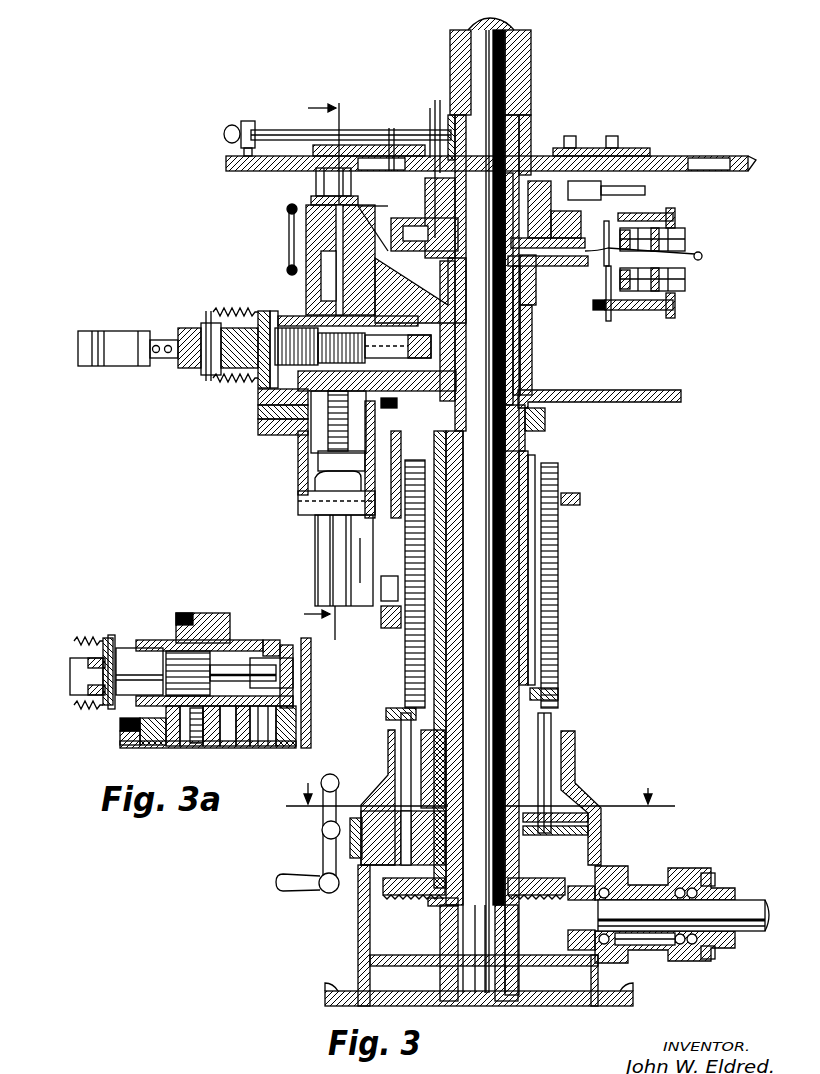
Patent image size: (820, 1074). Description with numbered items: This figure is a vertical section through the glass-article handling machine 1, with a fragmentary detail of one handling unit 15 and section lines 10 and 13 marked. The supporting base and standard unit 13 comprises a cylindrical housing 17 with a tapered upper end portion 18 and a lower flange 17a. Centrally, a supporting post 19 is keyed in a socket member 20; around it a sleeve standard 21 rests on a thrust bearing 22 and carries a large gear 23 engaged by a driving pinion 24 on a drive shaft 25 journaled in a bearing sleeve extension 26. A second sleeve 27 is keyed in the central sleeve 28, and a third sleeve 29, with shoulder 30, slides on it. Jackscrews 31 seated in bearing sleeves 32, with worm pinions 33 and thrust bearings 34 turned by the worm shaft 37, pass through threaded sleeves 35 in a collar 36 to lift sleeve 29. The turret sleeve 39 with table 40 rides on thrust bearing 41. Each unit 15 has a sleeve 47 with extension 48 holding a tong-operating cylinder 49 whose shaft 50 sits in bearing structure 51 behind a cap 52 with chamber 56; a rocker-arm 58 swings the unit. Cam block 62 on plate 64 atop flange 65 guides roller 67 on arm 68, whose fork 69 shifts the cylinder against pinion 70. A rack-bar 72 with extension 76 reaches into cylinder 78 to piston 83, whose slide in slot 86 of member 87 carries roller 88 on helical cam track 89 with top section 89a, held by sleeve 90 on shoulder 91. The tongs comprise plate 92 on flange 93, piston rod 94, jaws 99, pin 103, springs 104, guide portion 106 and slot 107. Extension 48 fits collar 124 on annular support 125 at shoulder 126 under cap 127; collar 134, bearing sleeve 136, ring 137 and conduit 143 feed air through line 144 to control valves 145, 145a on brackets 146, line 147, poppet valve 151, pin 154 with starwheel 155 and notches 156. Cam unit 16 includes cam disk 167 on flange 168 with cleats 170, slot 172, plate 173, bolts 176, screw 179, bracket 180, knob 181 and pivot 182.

In FIG. 3, the machine 1 is at (668, 148).
In FIG. 3, the section line 10 is at (306, 364).
In FIG. 3, the supporting base and standard unit 13 is at (570, 735).
In FIG. 3, the article handling unit 15 is at (157, 352).
In FIG. 3, the cam unit 16 is at (763, 152).
In FIG. 3, the housing 17 is at (350, 908).
In FIG. 3, the flange 17a is at (327, 983).
In FIG. 3, the inwardly tapered upper end portion 18 is at (567, 775).
In FIG. 3, the supporting post 19 is at (470, 48).
In FIG. 3, the socket member 20 is at (432, 929).
In FIG. 3, the sleeve standard 21 is at (427, 92).
In FIG. 3, the thrust bearing 22 is at (440, 896).
In FIG. 3, the large gear 23 is at (392, 887).
In FIG. 3, the driving pinion 24 is at (575, 925).
In FIG. 3, the drive shaft 25 is at (746, 892).
In FIG. 3, the bearing sleeve extension 26 is at (640, 877).
In FIG. 3, the second sleeve 27 is at (428, 448).
In FIG. 3, the central sleeve 28 is at (380, 722).
In FIG. 3, the third sleeve 29 is at (527, 443).
In FIG. 3, the shoulder 30 is at (522, 425).
In FIG. 3, the jackscrews 31 is at (397, 510).
In FIG. 3, the bearing sleeve 32 is at (350, 830).
In FIG. 3, the worm pinion 33 is at (580, 809).
In FIG. 3, the thrust bearing 34 is at (580, 823).
In FIG. 3, the threaded sleeve 35 is at (545, 697).
In FIG. 3, the large collar 36 is at (552, 683).
In FIG. 3, the worm shaft 37 is at (315, 816).
In FIG. 3, the sleeve 39 is at (524, 350).
In FIG. 3, the annular supporting shelf or table 40 is at (640, 382).
In FIG. 3, the thrust bearing 41 is at (537, 403).
In FIG. 3, the sleeve 47 is at (258, 310).
In FIG. 3A, the sleeve 47 is at (140, 632).
In FIG. 3, the cylindrical extension 48 is at (417, 329).
In FIG. 3A, the cylindrical extension 48 is at (210, 605).
In FIG. 3, the tong-operating cylinder 49 is at (320, 346).
In FIG. 3A, the tong-operating cylinder 49 is at (125, 640).
In FIG. 3, the shaft portion 50 is at (405, 327).
In FIG. 3A, the shaft portion 50 is at (268, 665).
In FIG. 3A, the bearing structure 51 is at (235, 738).
In FIG. 3, the cap 52 is at (375, 305).
In FIG. 3A, the cap 52 is at (243, 632).
In FIG. 3A, the chamber 56 is at (285, 672).
In FIG. 3, the rocker-arm 58 is at (290, 266).
In FIG. 3, the cam block 62 is at (250, 388).
In FIG. 3A, the cam block 62 is at (118, 723).
In FIG. 3, the plate 64 is at (250, 403).
In FIG. 3A, the plate 64 is at (125, 737).
In FIG. 3, the flange 65 is at (250, 418).
In FIG. 3, the roller 67 is at (262, 427).
In FIG. 3A, the roller 67 is at (112, 714).
In FIG. 3A, the radially extending arm 68 is at (257, 742).
In FIG. 3A, the fork 69 is at (165, 738).
In FIG. 3A, the pinion 70 is at (160, 643).
In FIG. 3, the rack-bar 72 is at (356, 454).
In FIG. 3A, the rack-bar 72 is at (200, 738).
In FIG. 3, the horizontal extension 76 is at (341, 441).
In FIG. 3, the cylinder 78 is at (290, 459).
In FIG. 3, the piston 83 is at (290, 484).
In FIG. 3, the cross-shaped guide slot 86 is at (330, 525).
In FIG. 3, the member 87 is at (290, 505).
In FIG. 3, the roller 88 is at (380, 568).
In FIG. 3, the cam track 89 is at (560, 540).
In FIG. 3, the top section 89a is at (373, 615).
In FIG. 3, the sleeve 90 is at (551, 592).
In FIG. 3, the shoulder 91 is at (551, 634).
In FIG. 3A, the plate 92 is at (96, 630).
In FIG. 3A, the peripheral flange 93 is at (103, 627).
In FIG. 3, the piston rod 94 is at (243, 315).
In FIG. 3, the tong jaw 99 is at (104, 330).
In FIG. 3, the pin 103 is at (178, 320).
In FIG. 3A, the tension springs 104 is at (71, 663).
In FIG. 3, the guide portion 106 is at (222, 370).
In FIG. 3, the guide slot 107 is at (243, 365).
In FIG. 3, the collar 124 is at (298, 222).
In FIG. 3, the annular support 125 is at (374, 216).
In FIG. 3, the shoulder 126 is at (524, 305).
In FIG. 3, the cap 127 is at (310, 188).
In FIG. 3, the collar 134 is at (420, 209).
In FIG. 3, the bearing sleeve 136 is at (523, 93).
In FIG. 3, the ring 137 is at (424, 215).
In FIG. 3, the conduit 143 is at (432, 105).
In FIG. 3, the line 144 is at (662, 254).
In FIG. 3, the control valve 145 is at (677, 280).
In FIG. 3, the control valve 145a is at (677, 226).
In FIG. 3, the brackets 146 is at (650, 205).
In FIG. 3, the line 147 is at (279, 200).
In FIG. 3, the poppet valve 151 is at (598, 266).
In FIG. 3, the pin 154 is at (600, 302).
In FIG. 3, the starwheel 155 is at (637, 180).
In FIG. 3, the notches 156 is at (590, 292).
In FIG. 3, the cam disk 167 is at (218, 152).
In FIG. 3, the flange 168 is at (554, 217).
In FIG. 3, the cleats 170 is at (383, 120).
In FIG. 3, the arcuate slot 172 is at (574, 140).
In FIG. 3, the arcuate plate 173 is at (609, 144).
In FIG. 3, the guiding bolts 176 is at (604, 128).
In FIG. 3, the screw 179 is at (360, 122).
In FIG. 3, the bracket 180 is at (240, 113).
In FIG. 3, the knurled knob 181 is at (216, 122).
In FIG. 3, the vertical pivot 182 is at (262, 163).